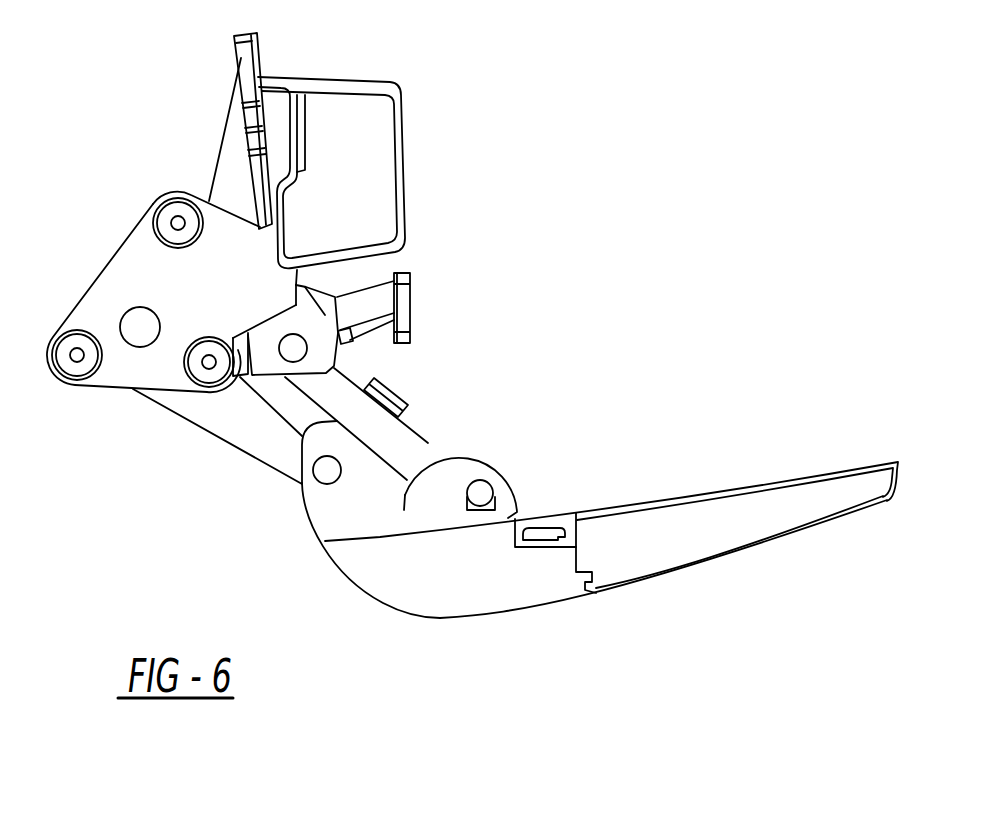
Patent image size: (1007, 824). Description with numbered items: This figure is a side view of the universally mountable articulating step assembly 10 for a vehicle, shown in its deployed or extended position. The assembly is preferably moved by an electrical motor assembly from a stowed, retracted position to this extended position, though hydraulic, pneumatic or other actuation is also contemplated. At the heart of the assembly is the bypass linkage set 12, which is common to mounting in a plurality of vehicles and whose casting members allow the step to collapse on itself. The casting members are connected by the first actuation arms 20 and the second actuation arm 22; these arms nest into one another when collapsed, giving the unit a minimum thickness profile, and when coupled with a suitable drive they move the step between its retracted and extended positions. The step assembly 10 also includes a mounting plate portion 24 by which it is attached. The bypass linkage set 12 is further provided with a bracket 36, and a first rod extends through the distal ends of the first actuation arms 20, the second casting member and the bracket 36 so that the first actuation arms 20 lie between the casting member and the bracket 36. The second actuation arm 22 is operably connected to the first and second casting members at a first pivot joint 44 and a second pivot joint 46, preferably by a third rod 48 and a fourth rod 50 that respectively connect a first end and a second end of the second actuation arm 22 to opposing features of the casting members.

The articulating step assembly 10 is at (158, 71).
The bypass linkage set 12 is at (124, 225).
The first actuation arms 20 is at (247, 433).
The second actuation arm 22 is at (397, 437).
The mounting plate portion 24 is at (242, 57).
The bracket 36 is at (115, 300).
The first pivot joint 44 is at (545, 480).
The second pivot joint 46 is at (318, 353).
The third rod 48 is at (480, 493).
The fourth rod 50 is at (293, 348).